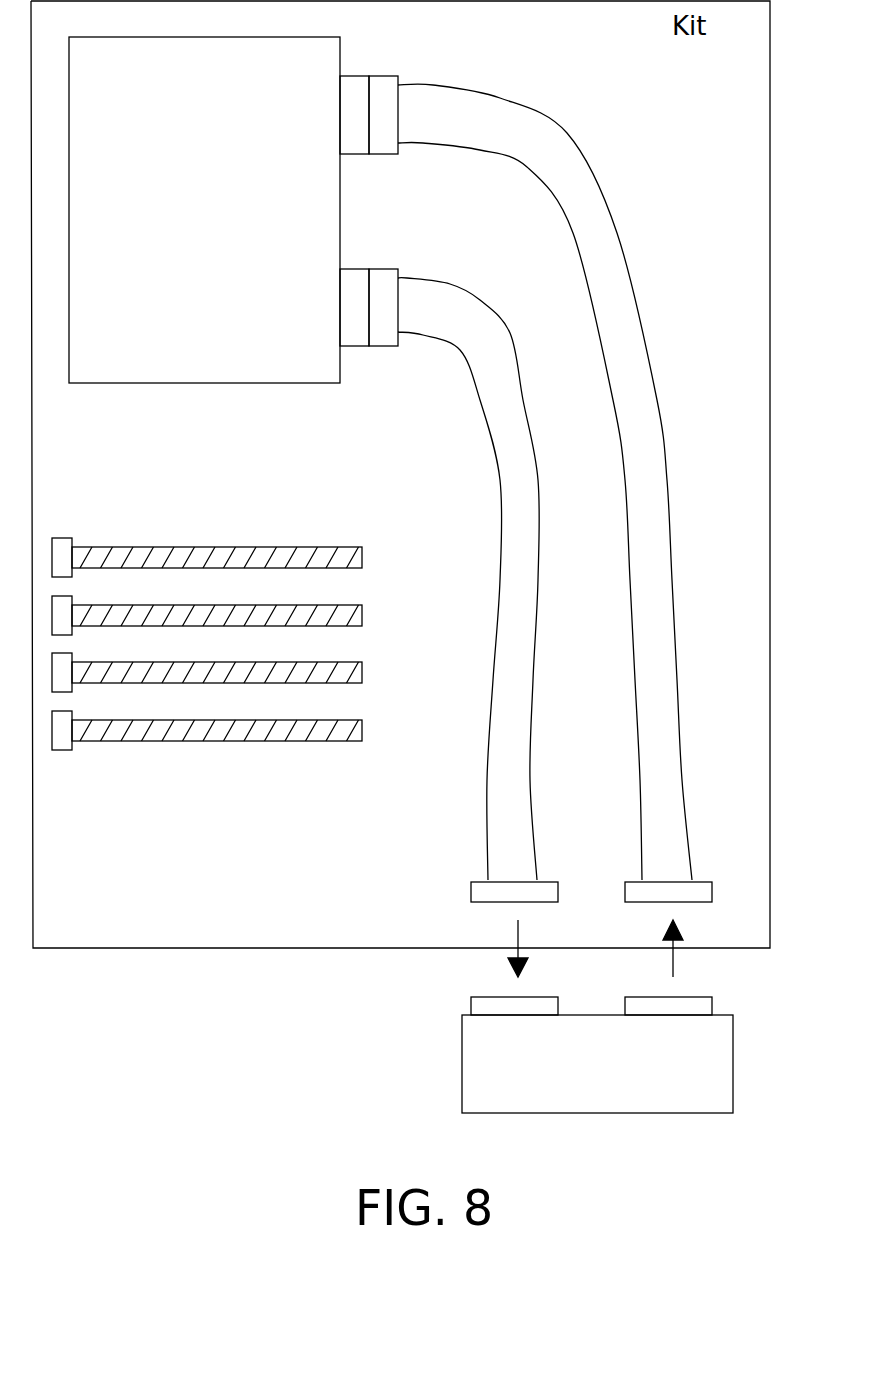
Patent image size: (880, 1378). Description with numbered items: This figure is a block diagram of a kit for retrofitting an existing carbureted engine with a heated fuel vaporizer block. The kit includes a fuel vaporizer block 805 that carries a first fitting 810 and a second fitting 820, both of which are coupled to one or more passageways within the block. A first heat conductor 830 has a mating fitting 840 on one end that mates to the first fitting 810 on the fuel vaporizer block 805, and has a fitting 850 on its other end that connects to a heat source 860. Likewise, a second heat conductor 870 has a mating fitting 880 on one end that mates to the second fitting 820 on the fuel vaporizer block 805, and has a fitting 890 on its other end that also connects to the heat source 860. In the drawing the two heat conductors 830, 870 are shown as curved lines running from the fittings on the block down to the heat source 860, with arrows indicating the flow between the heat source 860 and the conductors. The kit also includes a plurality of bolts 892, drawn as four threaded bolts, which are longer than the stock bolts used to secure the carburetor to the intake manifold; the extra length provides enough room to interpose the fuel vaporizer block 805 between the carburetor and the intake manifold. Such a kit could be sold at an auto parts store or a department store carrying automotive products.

The fuel vaporizer block 805 is at (220, 367).
The first fitting 810 is at (352, 74).
The mating fitting 840 is at (383, 75).
The first heat conductor 830 is at (585, 165).
The second fitting 820 is at (352, 268).
The mating fitting 880 is at (383, 268).
The second heat conductor 870 is at (477, 305).
The fitting 890 is at (558, 890).
The fitting 850 is at (712, 890).
The heat source 860 is at (733, 1062).
The bolts 892 is at (362, 557).